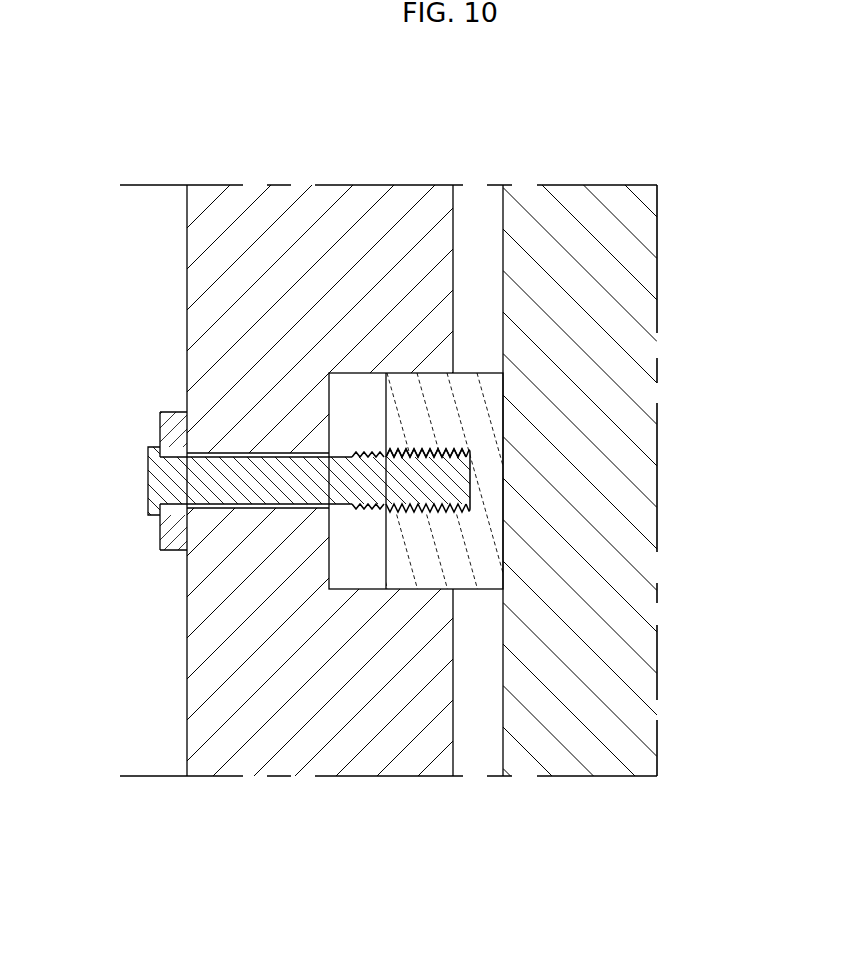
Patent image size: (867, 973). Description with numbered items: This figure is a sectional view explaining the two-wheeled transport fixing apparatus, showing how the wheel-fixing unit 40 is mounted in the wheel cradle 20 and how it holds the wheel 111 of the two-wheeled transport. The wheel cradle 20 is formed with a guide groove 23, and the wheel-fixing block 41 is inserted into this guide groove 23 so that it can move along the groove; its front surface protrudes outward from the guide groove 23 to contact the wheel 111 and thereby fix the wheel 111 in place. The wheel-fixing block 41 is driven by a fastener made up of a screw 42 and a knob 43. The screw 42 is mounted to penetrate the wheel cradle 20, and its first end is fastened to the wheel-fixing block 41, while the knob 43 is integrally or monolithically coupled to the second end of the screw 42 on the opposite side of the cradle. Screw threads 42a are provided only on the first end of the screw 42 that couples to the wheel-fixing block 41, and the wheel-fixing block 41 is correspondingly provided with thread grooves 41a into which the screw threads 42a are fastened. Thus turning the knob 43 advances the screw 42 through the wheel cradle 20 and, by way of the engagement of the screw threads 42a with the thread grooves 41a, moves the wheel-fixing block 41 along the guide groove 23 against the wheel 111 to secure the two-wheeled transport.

The wheel cradle 20 is at (377, 200).
The guide groove 23 is at (332, 553).
The wheel-fixing unit 40 is at (250, 467).
The wheel-fixing block 41 is at (539, 481).
The thread grooves 41a is at (455, 448).
The screw 42 is at (265, 492).
The screw threads 42a is at (363, 452).
The knob 43 is at (167, 422).
The wheel 111 is at (632, 570).